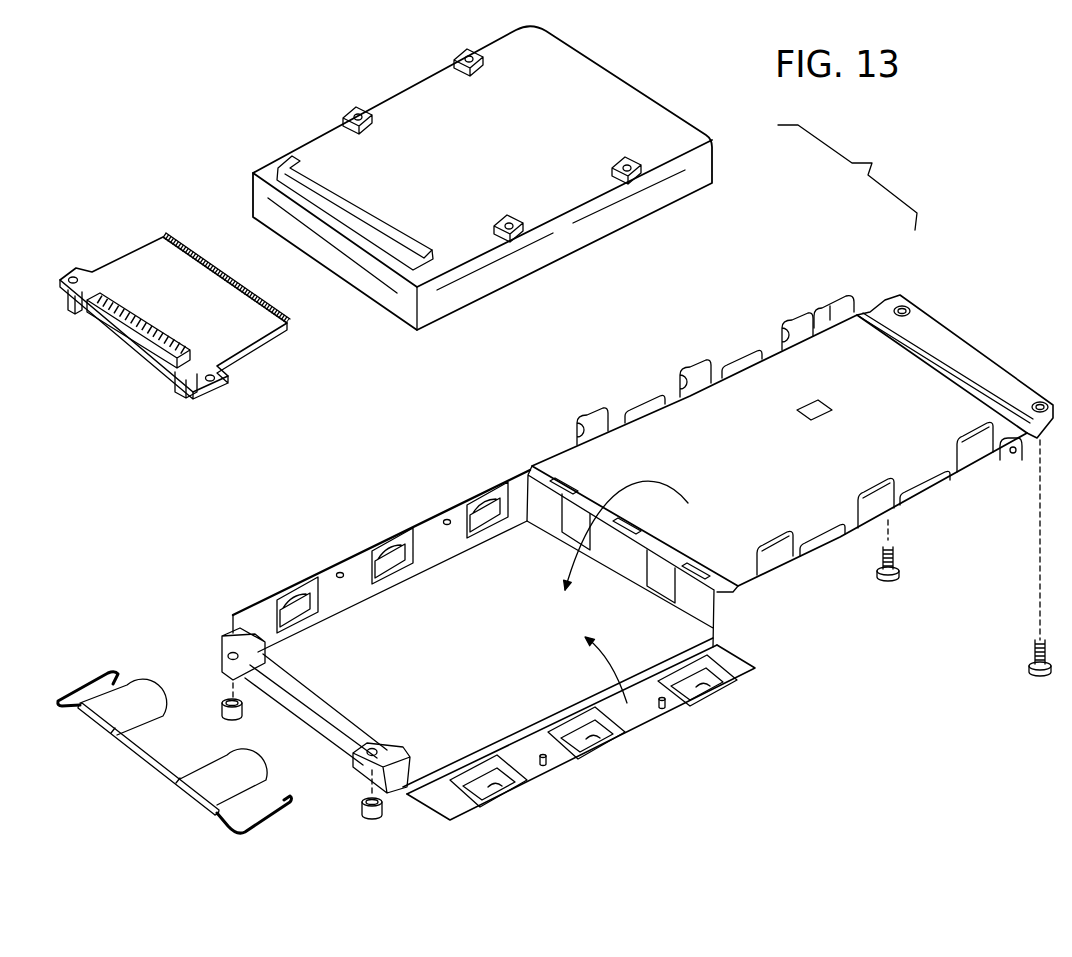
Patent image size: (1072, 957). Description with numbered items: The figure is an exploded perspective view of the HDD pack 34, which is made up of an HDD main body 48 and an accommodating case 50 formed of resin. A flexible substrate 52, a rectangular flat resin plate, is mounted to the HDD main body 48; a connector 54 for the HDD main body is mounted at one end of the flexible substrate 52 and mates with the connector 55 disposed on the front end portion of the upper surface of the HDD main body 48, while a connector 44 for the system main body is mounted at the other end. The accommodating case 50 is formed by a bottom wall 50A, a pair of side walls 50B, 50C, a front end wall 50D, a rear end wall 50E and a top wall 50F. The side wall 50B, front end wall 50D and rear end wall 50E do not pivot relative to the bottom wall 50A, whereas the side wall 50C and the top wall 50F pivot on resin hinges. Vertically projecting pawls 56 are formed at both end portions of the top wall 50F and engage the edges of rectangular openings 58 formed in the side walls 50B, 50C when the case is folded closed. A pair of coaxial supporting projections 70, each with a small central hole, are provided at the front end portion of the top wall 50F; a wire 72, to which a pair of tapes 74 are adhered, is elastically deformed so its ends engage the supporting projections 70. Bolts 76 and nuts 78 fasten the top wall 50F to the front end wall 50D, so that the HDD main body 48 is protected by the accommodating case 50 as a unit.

The HDD pack 34 is at (847, 177).
The connector for the system main body 44 is at (127, 342).
The HDD main body 48 is at (727, 157).
The accommodating case 50 is at (848, 278).
The bottom wall 50A is at (440, 747).
The side wall 50B is at (427, 537).
The side wall 50C is at (653, 713).
The front end wall 50D is at (322, 725).
The rear end wall 50E is at (720, 603).
The top wall 50F is at (947, 393).
The flexible substrate 52 is at (130, 262).
The connector for HDD main body 54 is at (288, 342).
The connector 55 is at (352, 215).
The pawls 56 is at (785, 325).
The rectangular openings 58 is at (400, 530).
The supporting projections 70 is at (822, 308).
The wire 72 is at (147, 762).
The tapes 74 is at (145, 698).
The bolts 76 is at (898, 580).
The nuts 78 is at (222, 718).